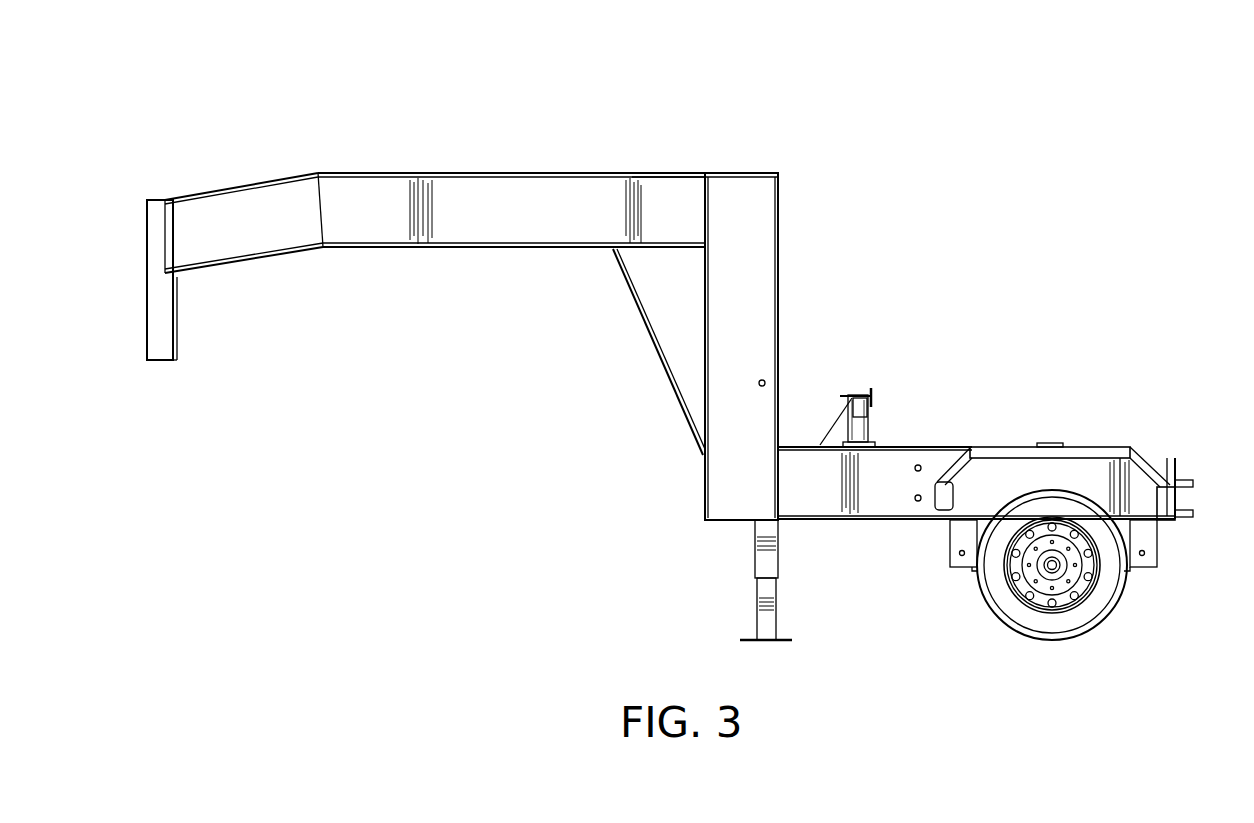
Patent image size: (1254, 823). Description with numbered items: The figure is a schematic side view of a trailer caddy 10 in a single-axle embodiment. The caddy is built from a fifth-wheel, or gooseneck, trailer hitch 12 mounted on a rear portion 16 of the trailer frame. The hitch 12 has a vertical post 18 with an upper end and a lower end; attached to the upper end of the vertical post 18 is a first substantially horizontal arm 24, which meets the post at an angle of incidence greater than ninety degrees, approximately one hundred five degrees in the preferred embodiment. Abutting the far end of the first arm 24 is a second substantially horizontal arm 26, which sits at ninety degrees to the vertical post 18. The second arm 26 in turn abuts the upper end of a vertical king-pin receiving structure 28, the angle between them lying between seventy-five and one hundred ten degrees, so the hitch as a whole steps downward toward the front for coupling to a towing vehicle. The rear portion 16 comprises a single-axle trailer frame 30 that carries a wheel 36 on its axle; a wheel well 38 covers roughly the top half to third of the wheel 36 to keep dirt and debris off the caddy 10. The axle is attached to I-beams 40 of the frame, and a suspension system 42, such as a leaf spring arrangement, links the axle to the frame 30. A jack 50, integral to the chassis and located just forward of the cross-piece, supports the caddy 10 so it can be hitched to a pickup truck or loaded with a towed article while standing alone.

The trailer caddy 10 is at (1023, 60).
The fifth-wheel trailer hitch 12 is at (555, 146).
The rear portion 16 is at (1073, 390).
The vertical post 18 is at (780, 310).
The first substantially horizontal arm 24 is at (448, 258).
The second substantially horizontal arm 26 is at (268, 260).
The vertical king-pin receiving structure 28 is at (147, 310).
The single-axle trailer frame 30 is at (935, 434).
The wheel 36 is at (1107, 617).
The wheel well 38 is at (1130, 447).
The I-beam 40 is at (892, 523).
The suspension system 42 is at (1150, 570).
The jack 50 is at (779, 565).